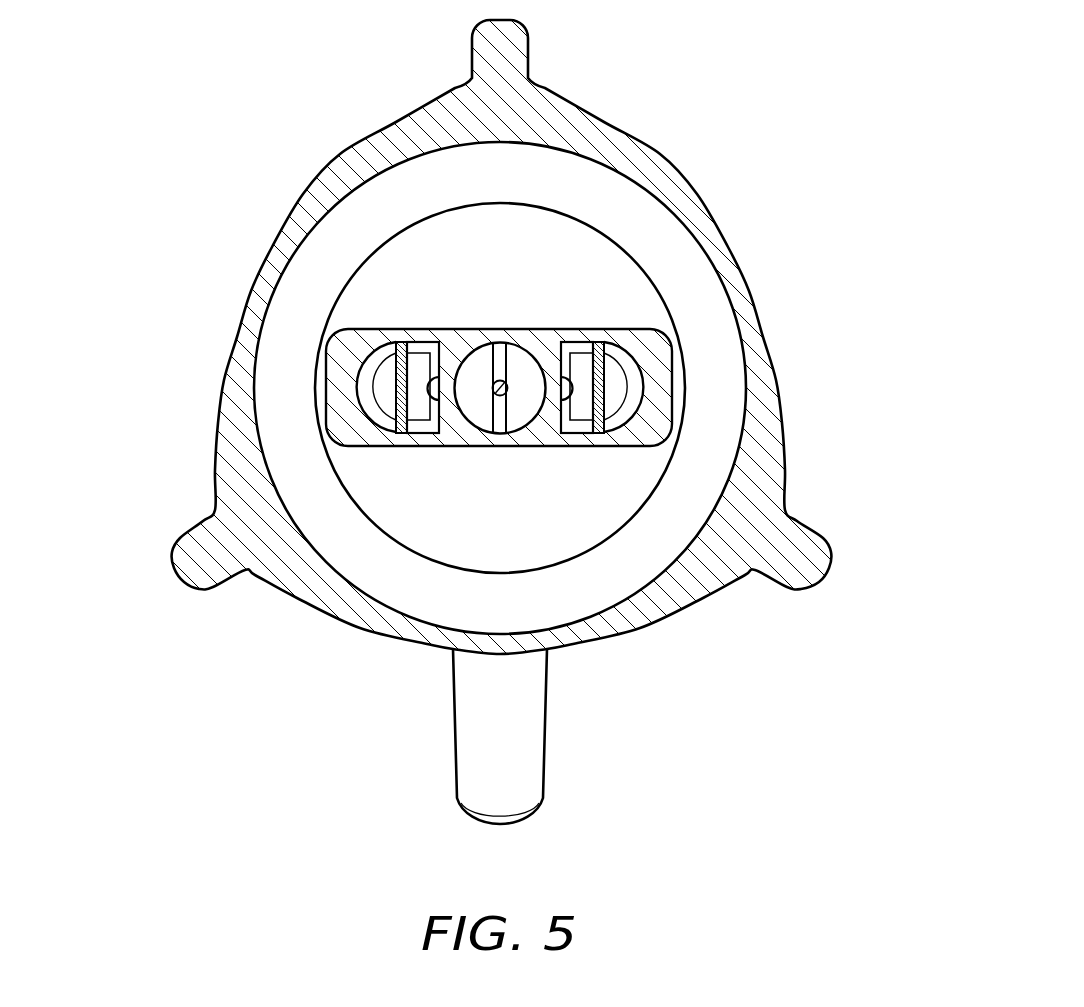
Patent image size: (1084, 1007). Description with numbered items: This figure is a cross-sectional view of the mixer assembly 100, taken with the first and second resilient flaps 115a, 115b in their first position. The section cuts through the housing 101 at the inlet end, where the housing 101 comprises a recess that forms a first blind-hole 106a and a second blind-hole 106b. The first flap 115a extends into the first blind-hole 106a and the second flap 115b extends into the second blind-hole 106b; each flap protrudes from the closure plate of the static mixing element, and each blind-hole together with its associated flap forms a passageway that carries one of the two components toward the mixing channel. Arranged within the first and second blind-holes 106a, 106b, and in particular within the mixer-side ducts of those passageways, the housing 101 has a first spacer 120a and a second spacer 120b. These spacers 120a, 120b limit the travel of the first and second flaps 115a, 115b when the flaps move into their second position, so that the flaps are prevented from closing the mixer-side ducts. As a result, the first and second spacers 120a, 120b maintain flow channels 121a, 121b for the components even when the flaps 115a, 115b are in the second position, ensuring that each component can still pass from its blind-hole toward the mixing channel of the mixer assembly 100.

The mixer assembly 100 is at (790, 58).
The housing 101 is at (568, 123).
The first blind-hole 106a is at (424, 345).
The second blind-hole 106b is at (576, 345).
The first resilient flap 115a is at (405, 378).
The second resilient flap 115b is at (595, 378).
The first spacer 120a is at (427, 386).
The second spacer 120b is at (573, 386).
The flow channel 121a is at (430, 360).
The flow channel 121b is at (573, 360).